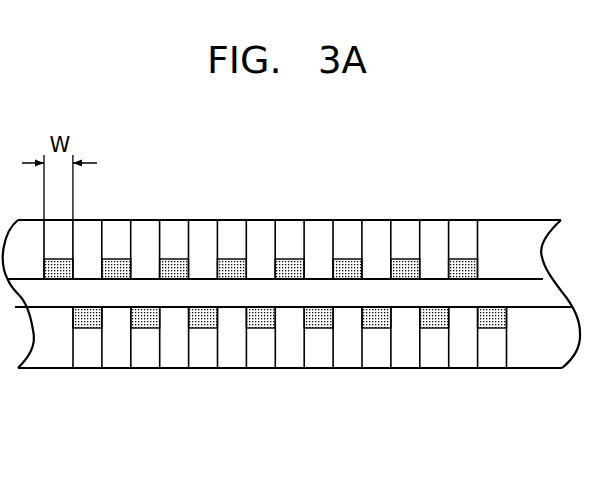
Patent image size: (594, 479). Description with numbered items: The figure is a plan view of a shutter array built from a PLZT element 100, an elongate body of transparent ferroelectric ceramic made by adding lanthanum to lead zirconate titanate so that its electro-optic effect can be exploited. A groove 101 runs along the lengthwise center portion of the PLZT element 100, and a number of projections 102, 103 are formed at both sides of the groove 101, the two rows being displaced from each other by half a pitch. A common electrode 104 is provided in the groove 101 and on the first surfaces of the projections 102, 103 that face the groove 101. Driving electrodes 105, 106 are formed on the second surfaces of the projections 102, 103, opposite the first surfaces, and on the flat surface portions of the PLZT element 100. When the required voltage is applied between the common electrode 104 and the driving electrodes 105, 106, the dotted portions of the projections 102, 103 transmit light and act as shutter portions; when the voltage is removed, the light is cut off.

The PLZT element 100 is at (520, 232).
The groove 101 is at (522, 306).
The projection 102 is at (115, 264).
The projection 103 is at (87, 325).
The common electrode 104 is at (378, 293).
The driving electrode 105 is at (290, 232).
The driving electrode 106 is at (200, 360).